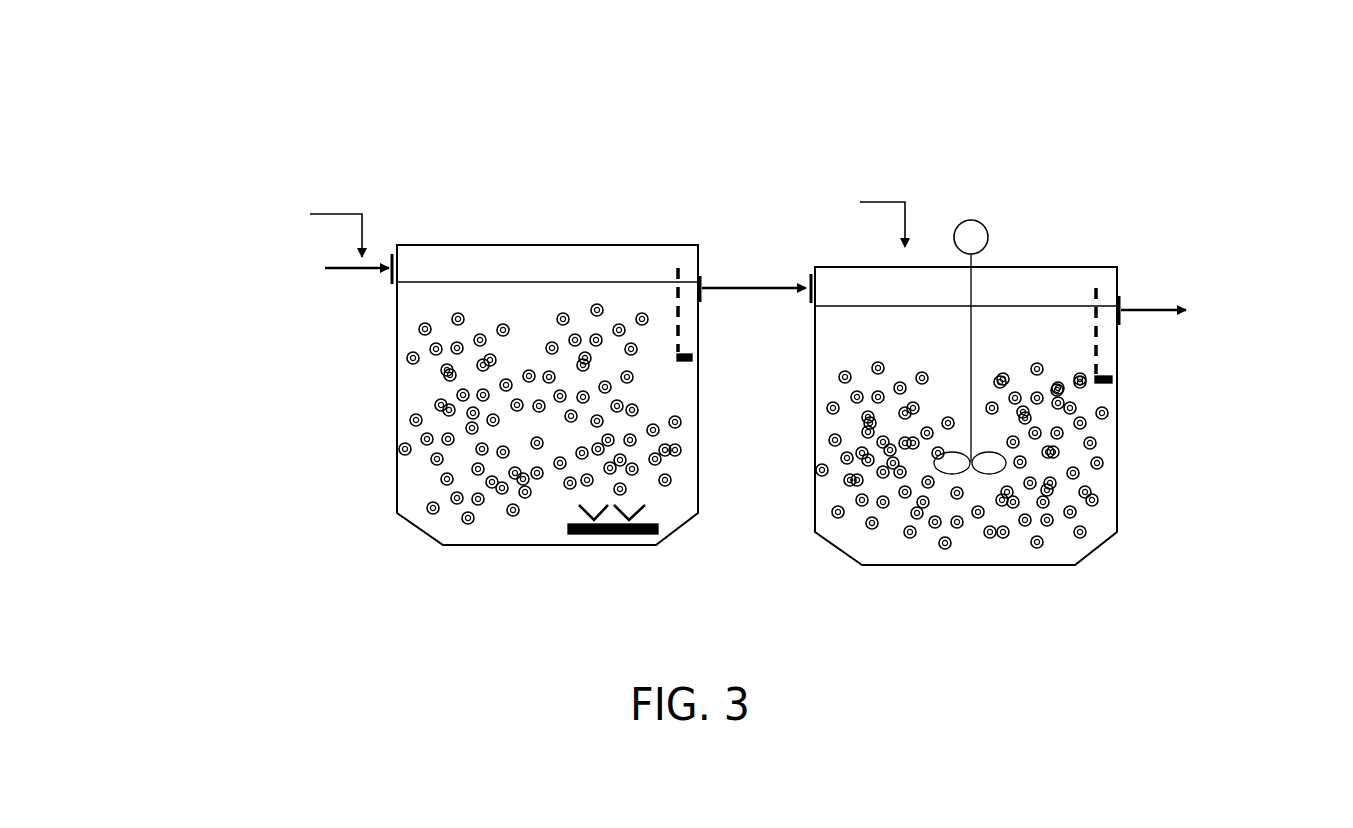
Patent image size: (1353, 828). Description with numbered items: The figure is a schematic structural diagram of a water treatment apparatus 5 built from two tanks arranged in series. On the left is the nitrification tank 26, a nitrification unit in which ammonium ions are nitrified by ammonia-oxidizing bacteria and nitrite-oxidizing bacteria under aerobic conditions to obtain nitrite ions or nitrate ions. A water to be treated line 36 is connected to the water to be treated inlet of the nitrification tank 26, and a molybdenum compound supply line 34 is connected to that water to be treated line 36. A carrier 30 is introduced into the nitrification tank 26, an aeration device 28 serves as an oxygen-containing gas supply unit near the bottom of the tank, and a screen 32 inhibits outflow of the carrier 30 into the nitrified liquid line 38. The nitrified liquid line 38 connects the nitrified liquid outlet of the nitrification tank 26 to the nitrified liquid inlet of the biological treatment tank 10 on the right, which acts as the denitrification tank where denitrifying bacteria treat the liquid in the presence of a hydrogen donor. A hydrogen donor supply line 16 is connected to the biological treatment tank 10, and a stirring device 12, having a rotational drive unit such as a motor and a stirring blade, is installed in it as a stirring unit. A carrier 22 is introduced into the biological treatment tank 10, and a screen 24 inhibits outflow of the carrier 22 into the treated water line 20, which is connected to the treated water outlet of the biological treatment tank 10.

The water treatment apparatus 5 is at (766, 80).
The biological treatment tank 10 is at (1008, 566).
The stirring device 12 is at (988, 230).
The hydrogen donor supply line 16 is at (905, 216).
The treated water line 20 is at (1152, 312).
The carrier 22 is at (1086, 534).
The screen 24 is at (1110, 385).
The nitrification tank 26 is at (556, 546).
The aeration device 28 is at (620, 535).
The carrier 30 is at (671, 481).
The screen 32 is at (690, 362).
The molybdenum compound supply line 34 is at (362, 222).
The water to be treated line 36 is at (348, 272).
The nitrified liquid line 38 is at (741, 290).